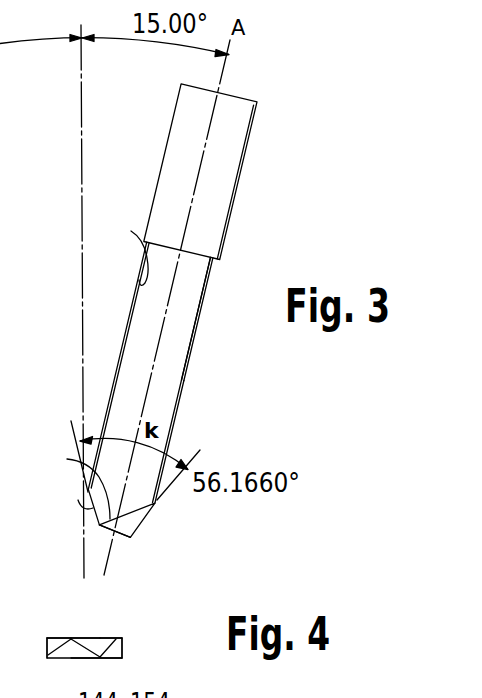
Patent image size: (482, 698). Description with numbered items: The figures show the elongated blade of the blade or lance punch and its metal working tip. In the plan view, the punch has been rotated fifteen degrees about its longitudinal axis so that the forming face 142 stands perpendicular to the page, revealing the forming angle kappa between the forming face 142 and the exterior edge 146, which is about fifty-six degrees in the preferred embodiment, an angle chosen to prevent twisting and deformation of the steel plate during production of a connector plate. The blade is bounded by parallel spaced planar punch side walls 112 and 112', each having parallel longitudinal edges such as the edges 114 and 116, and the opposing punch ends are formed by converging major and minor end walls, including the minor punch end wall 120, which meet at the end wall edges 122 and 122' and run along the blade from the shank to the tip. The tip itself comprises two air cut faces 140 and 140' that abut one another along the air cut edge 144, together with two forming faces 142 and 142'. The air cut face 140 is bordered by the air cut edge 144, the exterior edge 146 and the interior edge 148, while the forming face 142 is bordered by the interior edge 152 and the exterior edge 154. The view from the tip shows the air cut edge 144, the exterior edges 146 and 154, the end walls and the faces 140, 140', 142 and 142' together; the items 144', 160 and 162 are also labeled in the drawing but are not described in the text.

In FIG. 3, the punch side wall 112 is at (185, 373).
In FIG. 4, the punch side wall 112 is at (74, 667).
In FIG. 4, the punch side wall 112' is at (104, 603).
In FIG. 3, the longitudinal edge 114 is at (123, 247).
In FIG. 3, the longitudinal edge 116 is at (180, 400).
In FIG. 3, the minor punch end wall 120 is at (187, 378).
In FIG. 3, the end wall edge 122 is at (116, 365).
In FIG. 3, the end wall edge 122' is at (225, 319).
In FIG. 3, the air cut face 140 is at (158, 520).
In FIG. 4, the air cut face 140 is at (35, 657).
In FIG. 4, the air cut face 140' is at (160, 612).
In FIG. 4, the forming face 142 is at (113, 648).
In FIG. 4, the forming face 142' is at (44, 614).
In FIG. 3, the air cut edge 144 is at (97, 545).
In FIG. 4, the tip edge 144' is at (128, 605).
In FIG. 4, the exterior edge 146 is at (71, 623).
In FIG. 3, the interior edge 148 is at (55, 489).
In FIG. 3, the interior edge 152 is at (78, 500).
In FIG. 4, the exterior edge 154 is at (120, 639).
In FIG. 4, the side surface 160 is at (122, 651).
In FIG. 3, the sleeve plate 162 is at (239, 172).